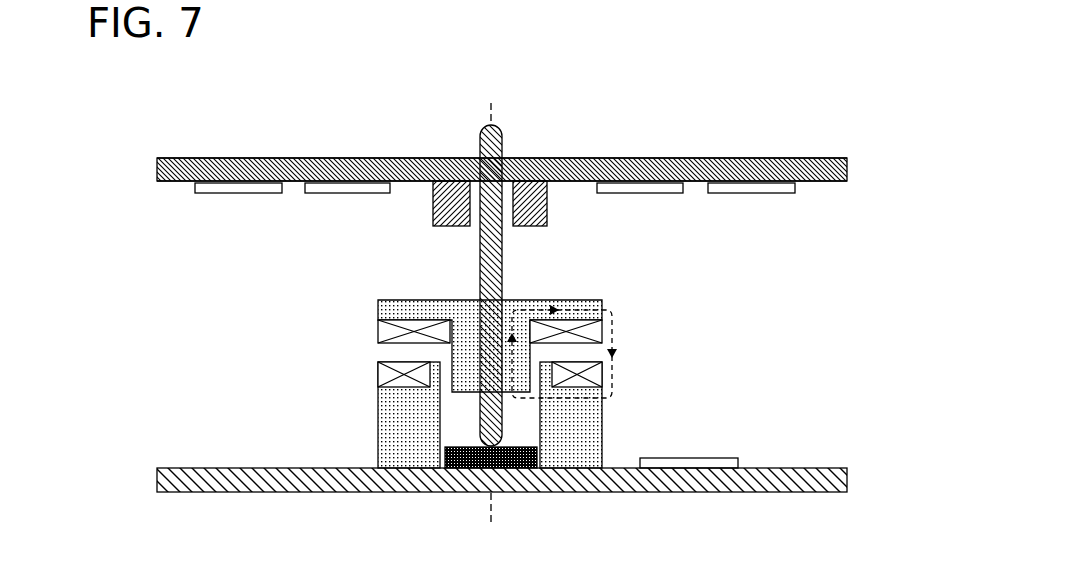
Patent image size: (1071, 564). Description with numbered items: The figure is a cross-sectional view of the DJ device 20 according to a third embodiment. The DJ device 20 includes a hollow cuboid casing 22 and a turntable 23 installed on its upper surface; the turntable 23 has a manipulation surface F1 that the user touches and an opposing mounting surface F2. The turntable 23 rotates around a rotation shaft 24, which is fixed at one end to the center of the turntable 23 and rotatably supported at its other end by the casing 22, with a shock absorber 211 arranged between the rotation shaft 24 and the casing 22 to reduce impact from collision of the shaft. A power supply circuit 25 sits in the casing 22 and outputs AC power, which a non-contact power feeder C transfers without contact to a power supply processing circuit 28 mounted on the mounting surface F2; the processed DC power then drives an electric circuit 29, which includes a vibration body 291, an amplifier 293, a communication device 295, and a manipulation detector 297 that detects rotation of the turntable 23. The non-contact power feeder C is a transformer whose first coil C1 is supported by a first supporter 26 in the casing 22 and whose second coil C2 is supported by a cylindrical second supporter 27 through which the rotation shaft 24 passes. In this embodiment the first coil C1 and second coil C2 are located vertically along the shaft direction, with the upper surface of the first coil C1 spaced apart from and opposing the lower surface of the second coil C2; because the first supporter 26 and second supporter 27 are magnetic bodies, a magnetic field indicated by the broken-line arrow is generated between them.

The DJ device 20 is at (790, 121).
The casing 22 is at (157, 479).
The turntable 23 is at (157, 169).
The manipulation surface F1 is at (183, 158).
The mounting surface F2 is at (183, 181).
The rotation shaft 24 is at (500, 143).
The power supply circuit 25 is at (722, 457).
The first supporter 26 is at (603, 412).
The second supporter 27 is at (603, 305).
The power supply processing circuit 28 is at (253, 194).
The electric circuit 29 is at (666, 253).
The vibration body 291 is at (531, 228).
The amplifier 293 is at (366, 194).
The communication device 295 is at (612, 194).
The manipulation detector 297 is at (722, 194).
The shock absorber 211 is at (440, 460).
The non-contact power feeder C is at (300, 317).
The first coil C1 is at (378, 368).
The second coil C2 is at (378, 330).